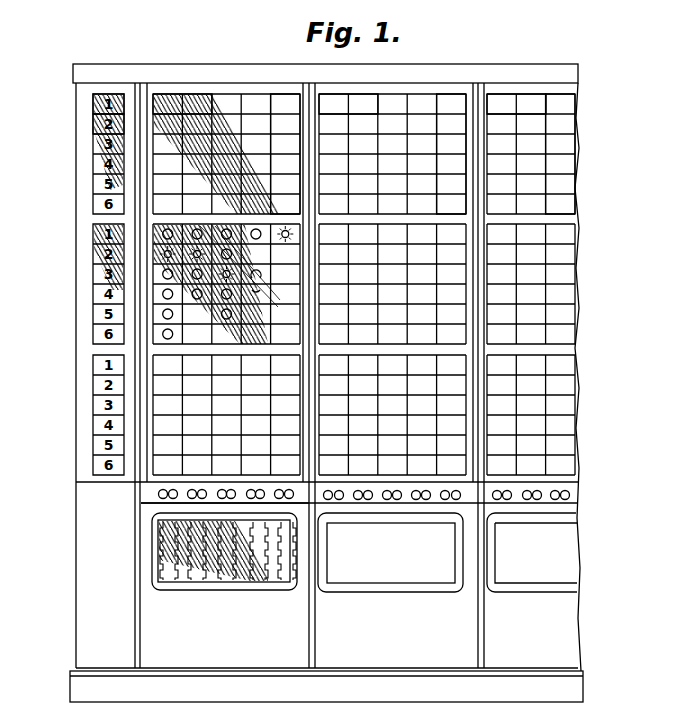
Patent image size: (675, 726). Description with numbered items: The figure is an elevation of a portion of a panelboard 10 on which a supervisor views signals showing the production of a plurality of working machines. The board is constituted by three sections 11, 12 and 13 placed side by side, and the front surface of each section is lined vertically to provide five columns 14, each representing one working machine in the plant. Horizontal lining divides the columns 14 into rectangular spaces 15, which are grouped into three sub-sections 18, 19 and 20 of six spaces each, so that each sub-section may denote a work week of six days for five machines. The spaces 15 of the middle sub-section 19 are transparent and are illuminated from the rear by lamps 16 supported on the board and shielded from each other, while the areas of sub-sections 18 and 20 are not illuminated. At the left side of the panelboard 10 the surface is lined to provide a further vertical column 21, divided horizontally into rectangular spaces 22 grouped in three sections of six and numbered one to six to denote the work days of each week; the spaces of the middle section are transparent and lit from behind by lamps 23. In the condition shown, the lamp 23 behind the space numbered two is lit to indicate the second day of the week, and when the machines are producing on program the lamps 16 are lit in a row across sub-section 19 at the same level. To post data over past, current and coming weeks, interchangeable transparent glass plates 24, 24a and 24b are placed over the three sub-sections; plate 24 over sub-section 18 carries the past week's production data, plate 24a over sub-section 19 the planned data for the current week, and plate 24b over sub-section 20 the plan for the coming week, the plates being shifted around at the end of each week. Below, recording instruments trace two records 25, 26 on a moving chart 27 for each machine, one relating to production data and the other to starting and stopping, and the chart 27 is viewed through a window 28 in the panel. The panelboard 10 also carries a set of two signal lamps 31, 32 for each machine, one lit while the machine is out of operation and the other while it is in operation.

The panelboard 10 is at (161, 66).
The first section 11 is at (235, 92).
The second section 12 is at (417, 90).
The third section 13 is at (554, 127).
The columns 14 is at (199, 96).
The rectangular spaces 15 is at (281, 98).
The lamps 16 is at (160, 335).
The upper sub-section 18 is at (578, 190).
The middle sub-section 19 is at (576, 302).
The lower sub-section 20 is at (578, 410).
The vertical column 21 is at (98, 103).
The rectangular spaces 22 is at (98, 122).
The lamps 23 is at (97, 256).
The transparent glass plate 24 is at (153, 207).
The transparent glass plate 24a is at (152, 311).
The transparent glass plate 24b is at (152, 461).
The record 25 is at (195, 567).
The record 26 is at (172, 562).
The moving chart 27 is at (208, 582).
The window 28 is at (180, 582).
The signal lamp 31 is at (158, 493).
The signal lamp 32 is at (160, 503).